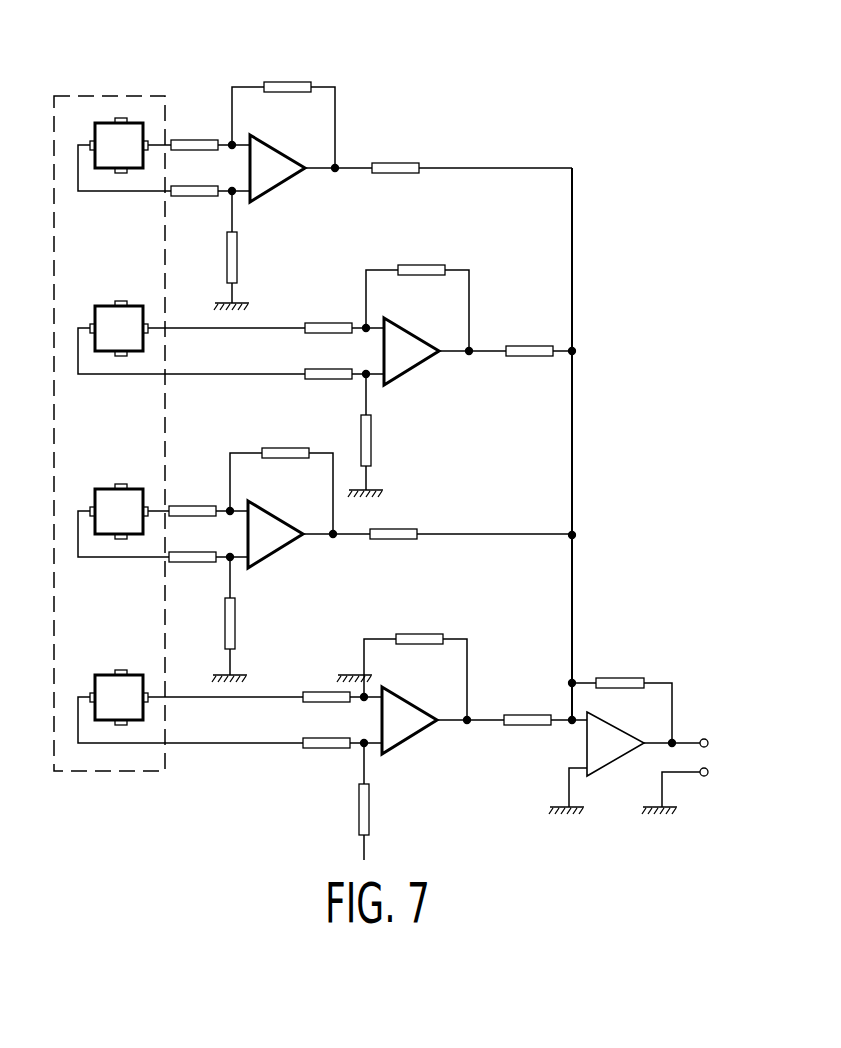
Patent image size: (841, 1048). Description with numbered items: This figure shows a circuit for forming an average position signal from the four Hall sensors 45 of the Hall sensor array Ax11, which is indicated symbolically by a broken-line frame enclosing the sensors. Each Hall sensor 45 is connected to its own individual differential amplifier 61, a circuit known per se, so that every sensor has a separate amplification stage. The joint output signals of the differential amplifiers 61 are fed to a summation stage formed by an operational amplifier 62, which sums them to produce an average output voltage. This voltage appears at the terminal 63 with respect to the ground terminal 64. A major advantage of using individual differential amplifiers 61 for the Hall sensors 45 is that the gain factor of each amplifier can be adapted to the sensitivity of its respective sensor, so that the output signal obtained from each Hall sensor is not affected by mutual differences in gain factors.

The Hall sensor 45 is at (110, 138).
The differential amplifier 61 is at (273, 174).
The operational amplifier 62 is at (600, 760).
The terminal 63 is at (702, 738).
The ground terminal 64 is at (703, 777).
The Hall sensor array Ax11 is at (113, 772).